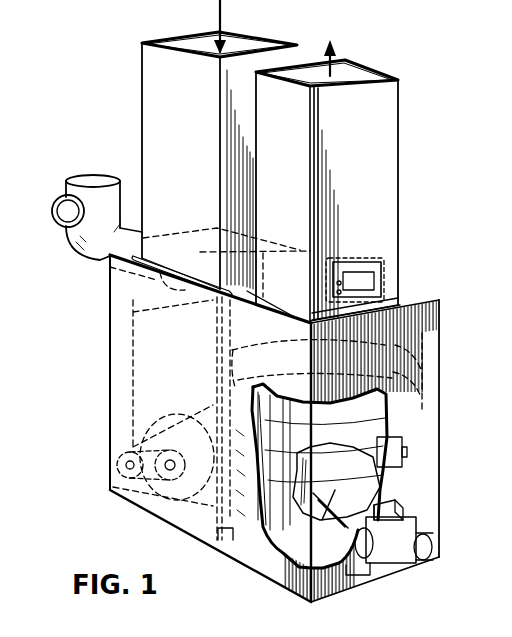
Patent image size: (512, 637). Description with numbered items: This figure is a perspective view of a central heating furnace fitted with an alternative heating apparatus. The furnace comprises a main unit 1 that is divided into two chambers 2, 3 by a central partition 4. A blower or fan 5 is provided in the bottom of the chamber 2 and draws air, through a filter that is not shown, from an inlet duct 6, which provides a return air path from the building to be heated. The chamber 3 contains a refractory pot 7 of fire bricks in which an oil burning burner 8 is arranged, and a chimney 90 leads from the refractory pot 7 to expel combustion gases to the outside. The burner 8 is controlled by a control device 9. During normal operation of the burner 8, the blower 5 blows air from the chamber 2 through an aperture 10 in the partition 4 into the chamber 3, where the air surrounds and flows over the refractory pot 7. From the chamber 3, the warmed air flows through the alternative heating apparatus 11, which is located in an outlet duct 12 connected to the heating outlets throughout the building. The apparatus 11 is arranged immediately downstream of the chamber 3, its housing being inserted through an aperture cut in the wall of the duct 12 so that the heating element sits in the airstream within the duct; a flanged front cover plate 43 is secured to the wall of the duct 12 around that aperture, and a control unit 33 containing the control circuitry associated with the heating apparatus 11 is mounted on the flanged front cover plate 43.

The main unit 1 is at (419, 295).
The chamber 2 is at (147, 357).
The chamber 3 is at (230, 368).
The central partition 4 is at (220, 342).
The blower 5 is at (157, 507).
The inlet duct 6 is at (155, 80).
The refractory pot 7 is at (293, 557).
The oil burning burner 8 is at (399, 490).
The control device 9 is at (399, 562).
The aperture 10 is at (222, 533).
The alternative heating apparatus 11 is at (356, 250).
The outlet duct 12 is at (388, 127).
The control unit 33 is at (373, 283).
The flanged front cover plate 43 is at (383, 263).
The chimney 90 is at (93, 252).